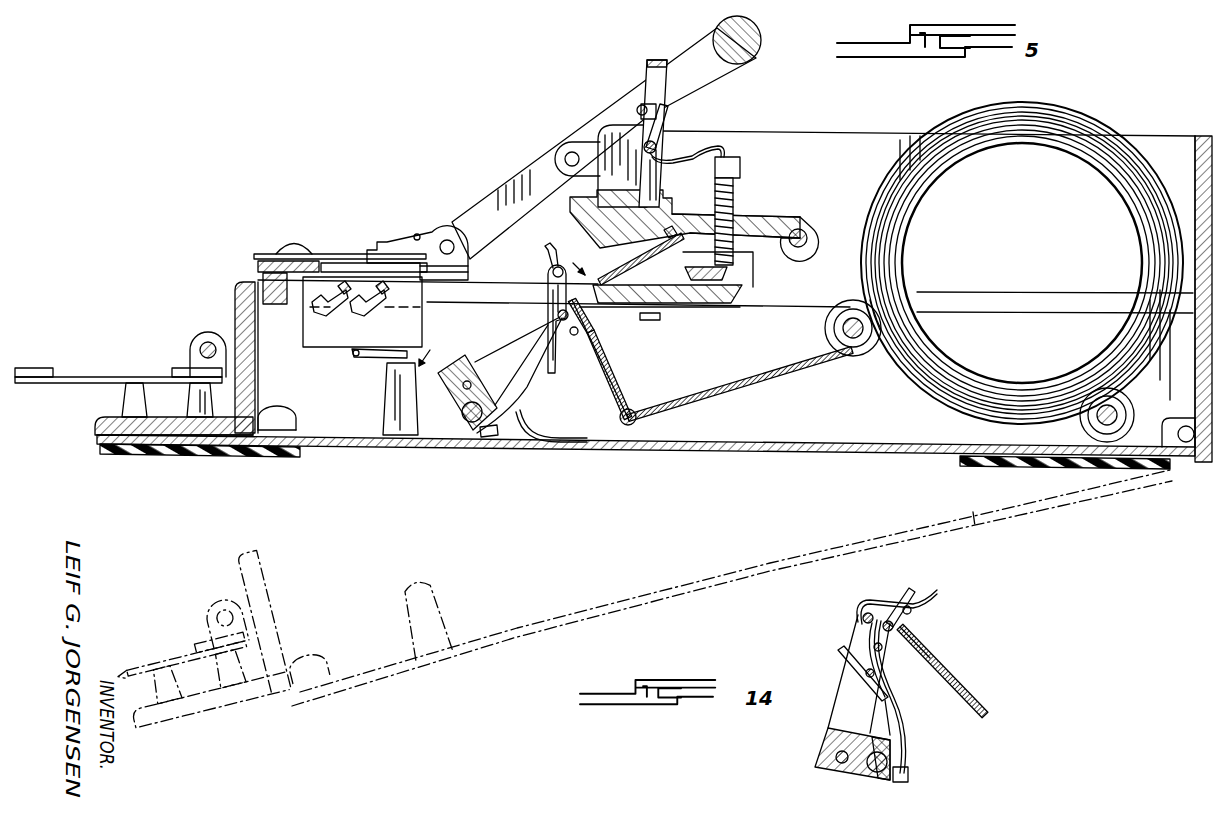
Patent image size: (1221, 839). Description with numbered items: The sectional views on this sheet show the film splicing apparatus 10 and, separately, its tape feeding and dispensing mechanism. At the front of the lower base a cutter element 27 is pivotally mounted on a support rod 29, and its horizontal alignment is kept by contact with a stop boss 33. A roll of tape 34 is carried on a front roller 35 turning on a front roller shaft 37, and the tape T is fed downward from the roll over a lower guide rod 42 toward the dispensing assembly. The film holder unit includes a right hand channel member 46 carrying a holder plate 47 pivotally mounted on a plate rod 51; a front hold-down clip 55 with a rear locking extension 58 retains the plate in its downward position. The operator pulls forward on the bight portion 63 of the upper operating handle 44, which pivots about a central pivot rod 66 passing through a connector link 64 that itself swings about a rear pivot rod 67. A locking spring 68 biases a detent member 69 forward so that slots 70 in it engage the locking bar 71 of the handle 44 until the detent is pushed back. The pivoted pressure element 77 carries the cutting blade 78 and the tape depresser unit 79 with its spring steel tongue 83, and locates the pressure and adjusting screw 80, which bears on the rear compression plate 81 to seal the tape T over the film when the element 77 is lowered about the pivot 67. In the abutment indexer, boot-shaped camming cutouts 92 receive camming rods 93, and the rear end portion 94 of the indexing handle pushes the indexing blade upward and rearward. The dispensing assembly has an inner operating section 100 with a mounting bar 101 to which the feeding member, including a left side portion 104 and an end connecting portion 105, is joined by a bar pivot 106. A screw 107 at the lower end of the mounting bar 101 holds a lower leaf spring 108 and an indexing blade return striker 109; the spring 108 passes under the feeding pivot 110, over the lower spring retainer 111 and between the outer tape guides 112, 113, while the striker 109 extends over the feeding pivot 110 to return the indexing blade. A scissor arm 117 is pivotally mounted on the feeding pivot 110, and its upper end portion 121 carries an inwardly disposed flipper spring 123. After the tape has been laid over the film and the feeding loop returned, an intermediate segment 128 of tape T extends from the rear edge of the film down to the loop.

In FIG. 5, the machine (arrow indicator) 10 is at (504, 302).
In FIG. 5, the left hand cutter element 27 is at (90, 377).
In FIG. 5, the support rod 29 is at (208, 342).
In FIG. 5, the stop boss 33 is at (122, 392).
In FIG. 5, the roll of tape 34 is at (1068, 121).
In FIG. 5, the front roller 35 is at (850, 300).
In FIG. 5, the front roller shaft 37 is at (878, 312).
In FIG. 5, the lower guide rod 42 is at (634, 414).
In FIG. 5, the upper operating handle 44 is at (706, 63).
In FIG. 5, the right hand channel member 46 is at (326, 263).
In FIG. 5, the holder plate 47 is at (312, 261).
In FIG. 5, the plate rod 51 is at (448, 240).
In FIG. 5, the front hold-down clip 55 is at (259, 252).
In FIG. 5, the rear locking extension 58 is at (297, 245).
In FIG. 5, the bight portion 63 is at (760, 40).
In FIG. 5, the left hand connector link 64 is at (592, 150).
In FIG. 5, the central pivot rod 66 is at (562, 152).
In FIG. 5, the rear pivot rod 67 is at (806, 231).
In FIG. 5, the locking spring 68 is at (713, 148).
In FIG. 5, the detent member 69 is at (666, 82).
In FIG. 5, the slots 70 is at (666, 112).
In FIG. 5, the locking bar 71 is at (640, 106).
In FIG. 5, the pivoted pressure element 77 is at (784, 226).
In FIG. 5, the cutting blade 78 is at (575, 262).
In FIG. 5, the tape depresser unit 79 is at (672, 318).
In FIG. 5, the combination pressure and adjusting screw 80 is at (741, 166).
In FIG. 5, the rear compression plate 81 is at (727, 269).
In FIG. 5, the spring steel tongue 83 is at (641, 255).
In FIG. 5, the boot-shaped camming cutouts 92 is at (330, 300).
In FIG. 5, the camming rods 93 is at (358, 300).
In FIG. 5, the rear end portion 94 is at (366, 358).
In FIG. 5, the inner operating section 100 is at (480, 434).
In FIG. 14, the inner operating section 100 is at (882, 780).
In FIG. 5, the mounting bar 101 is at (466, 416).
In FIG. 14, the mounting bar 101 is at (873, 773).
In FIG. 5, the left side portion 104 is at (488, 370).
In FIG. 14, the left side portion 104 is at (852, 688).
In FIG. 5, the end connecting portion 105 is at (591, 329).
In FIG. 14, the end connecting portion 105 is at (912, 611).
In FIG. 5, the bar pivot 106 is at (465, 389).
In FIG. 14, the bar pivot 106 is at (840, 764).
In FIG. 14, the screw 107 is at (908, 775).
In FIG. 14, the lower leaf spring 108 is at (900, 712).
In FIG. 14, the indexing blade return striker 109 is at (882, 714).
In FIG. 5, the feeding pivot 110 is at (540, 374).
In FIG. 14, the feeding pivot 110 is at (875, 675).
In FIG. 5, the lower spring retainer 111 is at (547, 343).
In FIG. 14, the lower spring retainer 111 is at (883, 648).
In FIG. 5, the outer tape guide 112 is at (557, 314).
In FIG. 14, the outer tape guide 112 is at (869, 613).
In FIG. 5, the outer tape guide 113 is at (574, 337).
In FIG. 14, the outer tape guide 113 is at (895, 626).
In FIG. 5, the scissor arm 117 is at (552, 287).
In FIG. 5, the upper end portion 121 is at (553, 272).
In FIG. 14, the upper end portion 121 is at (908, 606).
In FIG. 5, the flipper spring 123 is at (549, 250).
In FIG. 14, the flipper spring 123 is at (910, 590).
In FIG. 5, the intermediate segment 128 is at (600, 362).
In FIG. 5, the tape T is at (610, 383).
In FIG. 14, the tape T is at (937, 594).